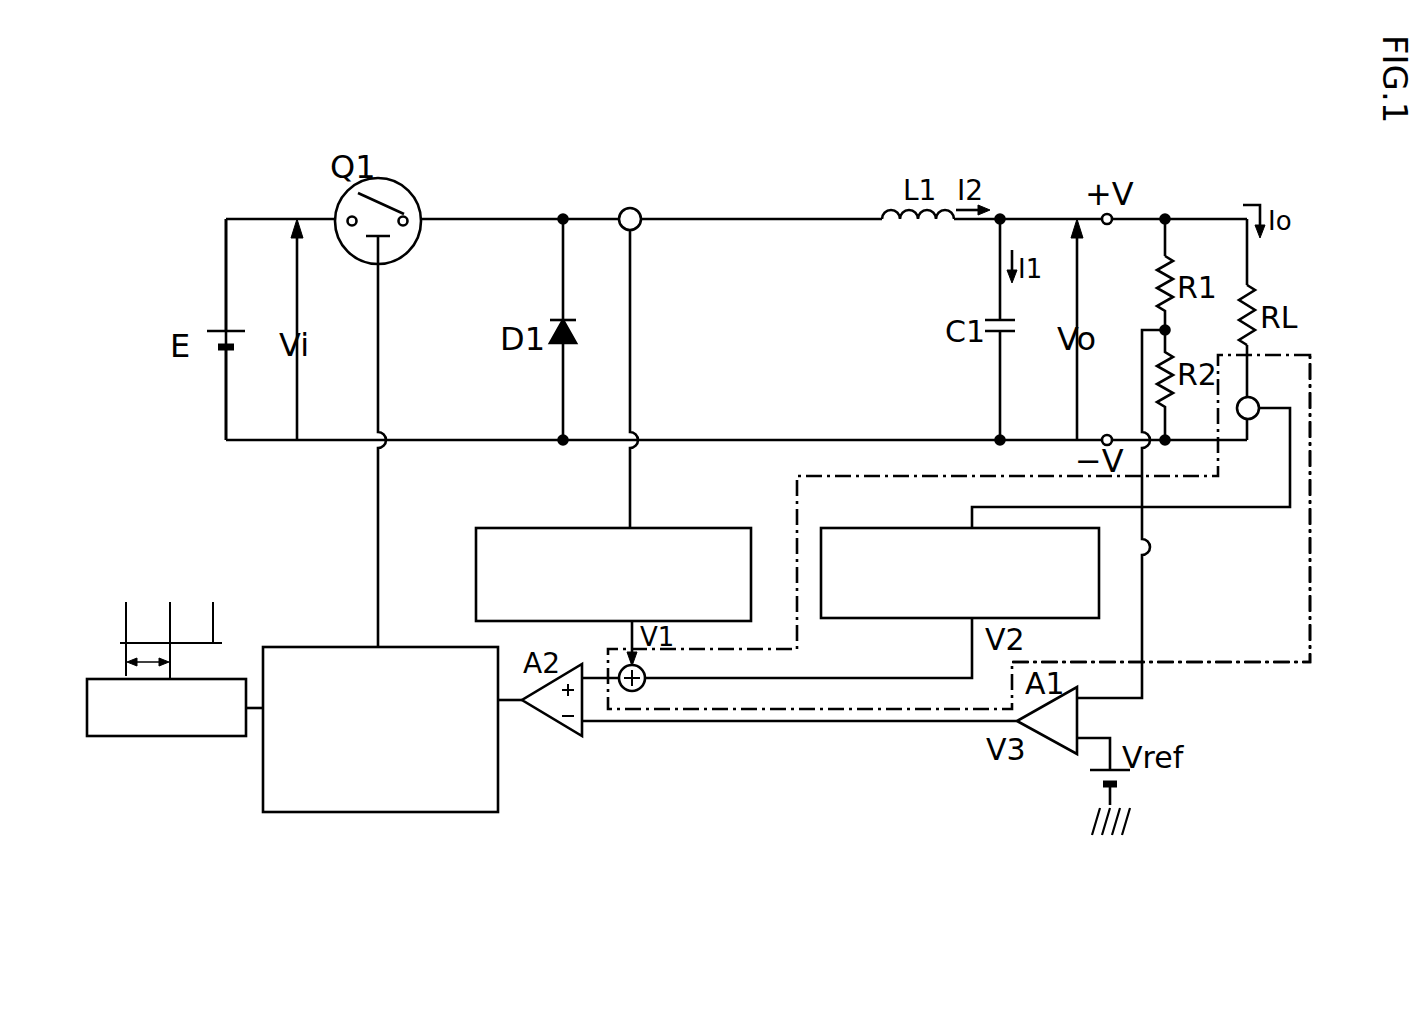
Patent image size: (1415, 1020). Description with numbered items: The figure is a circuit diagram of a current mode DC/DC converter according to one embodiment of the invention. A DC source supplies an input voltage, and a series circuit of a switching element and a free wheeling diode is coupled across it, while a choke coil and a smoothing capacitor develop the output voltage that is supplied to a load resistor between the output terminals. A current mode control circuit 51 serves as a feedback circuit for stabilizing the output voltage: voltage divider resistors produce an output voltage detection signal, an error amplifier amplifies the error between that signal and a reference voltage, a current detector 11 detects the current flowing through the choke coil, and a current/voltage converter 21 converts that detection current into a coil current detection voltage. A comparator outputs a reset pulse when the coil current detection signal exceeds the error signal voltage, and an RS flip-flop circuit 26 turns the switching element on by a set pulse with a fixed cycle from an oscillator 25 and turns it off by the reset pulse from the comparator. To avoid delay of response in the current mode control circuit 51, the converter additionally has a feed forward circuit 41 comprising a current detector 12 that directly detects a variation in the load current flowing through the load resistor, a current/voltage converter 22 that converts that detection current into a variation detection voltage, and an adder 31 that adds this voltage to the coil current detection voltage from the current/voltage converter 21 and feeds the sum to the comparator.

The current detector 11 is at (626, 208).
The current detector 12 is at (1256, 399).
The current/voltage converter 21 is at (650, 527).
The current/voltage converter 22 is at (860, 527).
The oscillator 25 is at (133, 737).
The RS flip-flop circuit 26 is at (445, 812).
The adder 31 is at (645, 672).
The feed forward circuit 41 is at (1228, 664).
The current mode control circuit 51 is at (812, 793).